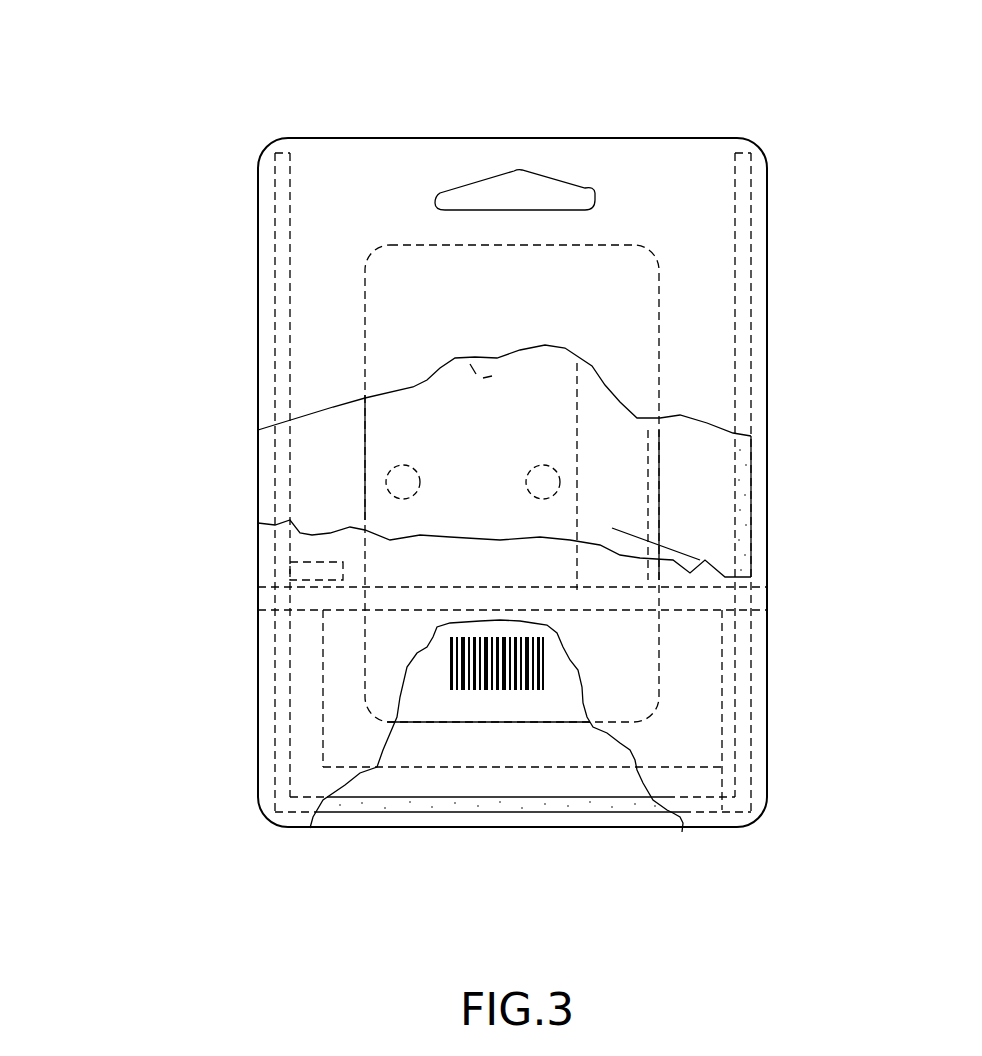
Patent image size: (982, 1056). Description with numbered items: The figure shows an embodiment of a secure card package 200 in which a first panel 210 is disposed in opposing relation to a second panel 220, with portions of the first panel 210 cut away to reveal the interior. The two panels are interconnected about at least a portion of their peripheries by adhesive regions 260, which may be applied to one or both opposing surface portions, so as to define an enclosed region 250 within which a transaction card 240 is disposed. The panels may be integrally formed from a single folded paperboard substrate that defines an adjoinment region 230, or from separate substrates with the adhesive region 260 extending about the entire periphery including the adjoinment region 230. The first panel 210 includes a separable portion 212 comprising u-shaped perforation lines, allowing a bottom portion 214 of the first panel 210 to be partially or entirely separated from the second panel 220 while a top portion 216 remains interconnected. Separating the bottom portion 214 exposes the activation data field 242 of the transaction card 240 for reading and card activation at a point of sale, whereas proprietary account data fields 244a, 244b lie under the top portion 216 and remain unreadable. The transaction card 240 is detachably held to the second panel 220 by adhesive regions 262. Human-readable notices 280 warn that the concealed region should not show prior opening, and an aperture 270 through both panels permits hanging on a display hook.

The secure card package 200 is at (501, 482).
The first panel 210 is at (300, 330).
The separable portion 212 is at (327, 588).
The bottom portion 214 is at (347, 714).
The top portion 216 is at (700, 560).
The second panel 220 is at (258, 440).
The adjoinment region 230 is at (405, 155).
The transaction card 240 is at (466, 600).
The activation data field 242 is at (543, 660).
The proprietary account data field 244a is at (415, 408).
The proprietary account data field 244b is at (648, 443).
The enclosed region 250 is at (566, 774).
The adhesive regions 260 is at (275, 228).
The adhesive regions 262 is at (493, 373).
The aperture 270 is at (515, 190).
The human-readable notices 280 is at (310, 483).